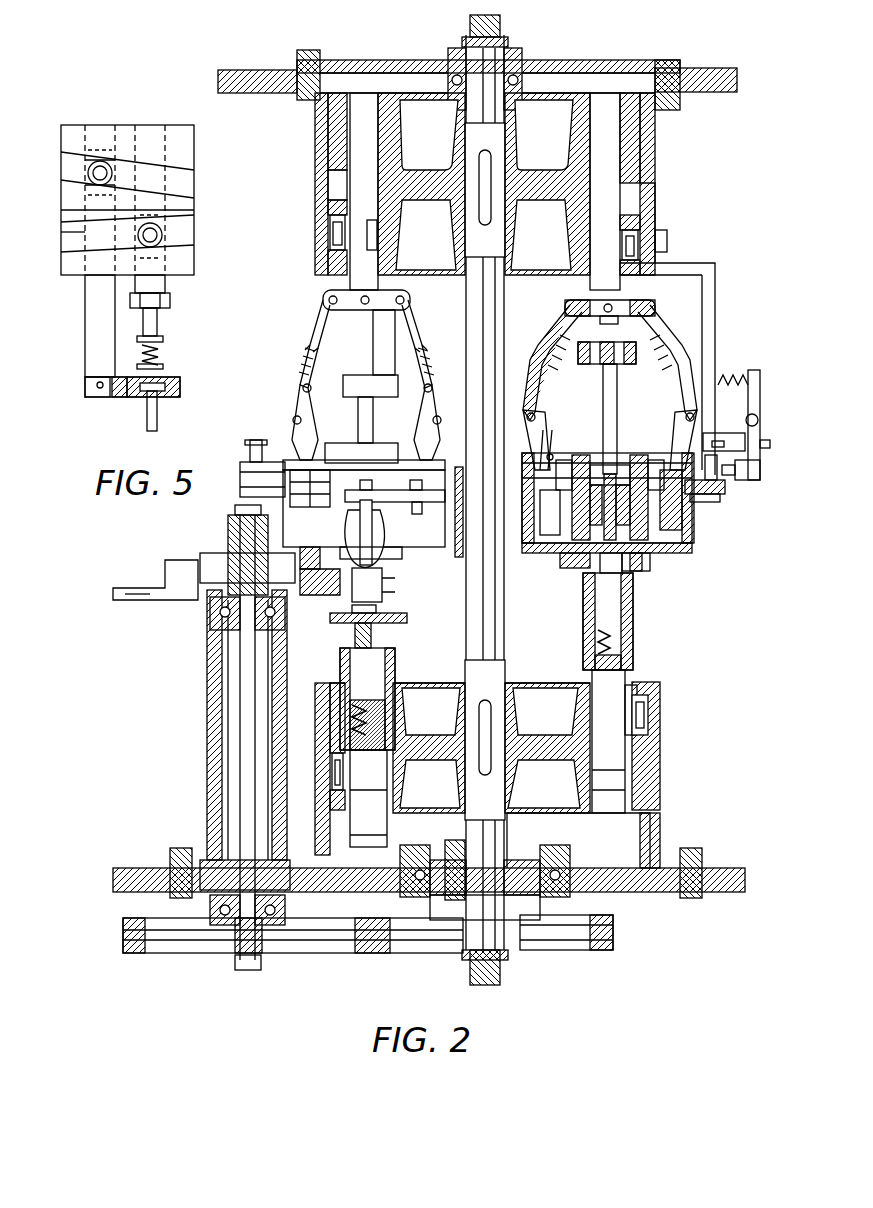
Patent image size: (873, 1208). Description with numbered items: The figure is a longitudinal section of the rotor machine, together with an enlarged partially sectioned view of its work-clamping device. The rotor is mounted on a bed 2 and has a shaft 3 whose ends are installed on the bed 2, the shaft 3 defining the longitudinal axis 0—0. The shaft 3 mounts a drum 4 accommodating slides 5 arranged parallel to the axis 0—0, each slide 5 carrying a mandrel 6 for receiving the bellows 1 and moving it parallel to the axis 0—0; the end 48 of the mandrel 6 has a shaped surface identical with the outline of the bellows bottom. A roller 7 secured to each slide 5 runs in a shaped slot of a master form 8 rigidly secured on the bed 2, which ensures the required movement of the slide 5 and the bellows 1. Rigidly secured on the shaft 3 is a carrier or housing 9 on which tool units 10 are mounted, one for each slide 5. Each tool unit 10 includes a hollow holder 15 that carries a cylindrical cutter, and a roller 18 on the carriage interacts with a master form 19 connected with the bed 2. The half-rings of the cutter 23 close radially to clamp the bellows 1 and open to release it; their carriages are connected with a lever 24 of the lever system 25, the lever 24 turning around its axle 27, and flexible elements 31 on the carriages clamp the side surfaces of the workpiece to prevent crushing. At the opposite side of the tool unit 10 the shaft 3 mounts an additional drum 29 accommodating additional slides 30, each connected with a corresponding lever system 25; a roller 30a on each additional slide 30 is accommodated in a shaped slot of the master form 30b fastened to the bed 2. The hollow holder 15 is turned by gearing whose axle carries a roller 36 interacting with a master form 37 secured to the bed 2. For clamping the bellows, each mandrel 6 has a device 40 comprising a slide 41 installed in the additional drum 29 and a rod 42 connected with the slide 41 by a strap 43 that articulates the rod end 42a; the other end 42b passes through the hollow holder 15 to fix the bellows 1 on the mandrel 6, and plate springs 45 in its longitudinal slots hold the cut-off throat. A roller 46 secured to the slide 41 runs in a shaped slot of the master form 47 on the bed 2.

In FIG. 2, the axis 0 is at (485, 0).
In FIG. 2, the bellows 1 is at (381, 585).
In FIG. 2, the bed 2 is at (713, 70).
In FIG. 2, the shaft 3 is at (470, 293).
In FIG. 2, the drum 4 is at (580, 750).
In FIG. 2, the slide 5 is at (618, 678).
In FIG. 2, the mandrel 6 is at (608, 611).
In FIG. 2, the roller 7 is at (652, 700).
In FIG. 2, the master form 8 is at (645, 720).
In FIG. 2, the carrier or housing 9 is at (458, 468).
In FIG. 2, the tool unit 10 is at (698, 533).
In FIG. 2, the hollow holder 15 is at (622, 470).
In FIG. 2, the roller 18 is at (727, 480).
In FIG. 2, the master form 19 is at (748, 465).
In FIG. 2, the cutter 23 is at (570, 548).
In FIG. 2, the lever 24 is at (670, 523).
In FIG. 2, the lever system 25 is at (675, 368).
In FIG. 5, the lever system 25 is at (163, 355).
In FIG. 2, the axle 27 is at (552, 455).
In FIG. 2, the additional drum 29 is at (580, 158).
In FIG. 2, the additional slide 30 is at (378, 176).
In FIG. 5, the additional slide 30 is at (170, 172).
In FIG. 2, the roller 30a is at (340, 240).
In FIG. 5, the roller 30a is at (163, 235).
In FIG. 2, the master form 30b is at (330, 222).
In FIG. 5, the master form 30b is at (72, 240).
In FIG. 2, the flexible elements 31 is at (655, 560).
In FIG. 2, the roller 36 is at (715, 432).
In FIG. 2, the master form 37 is at (745, 440).
In FIG. 2, the device 40 is at (355, 410).
In FIG. 2, the slide 41 is at (380, 337).
In FIG. 5, the slide 41 is at (90, 314).
In FIG. 2, the rod 42 is at (607, 400).
In FIG. 5, the rod 42 is at (162, 416).
In FIG. 5, the end of rod 42a is at (131, 413).
In FIG. 2, the end of rod 42b is at (372, 548).
In FIG. 2, the strap 43 is at (625, 340).
In FIG. 5, the strap 43 is at (110, 377).
In FIG. 2, the plate springs 45 is at (355, 535).
In FIG. 5, the roller 46 is at (88, 170).
In FIG. 5, the master form 47 is at (80, 175).
In FIG. 2, the end of mandrel 48 is at (350, 620).